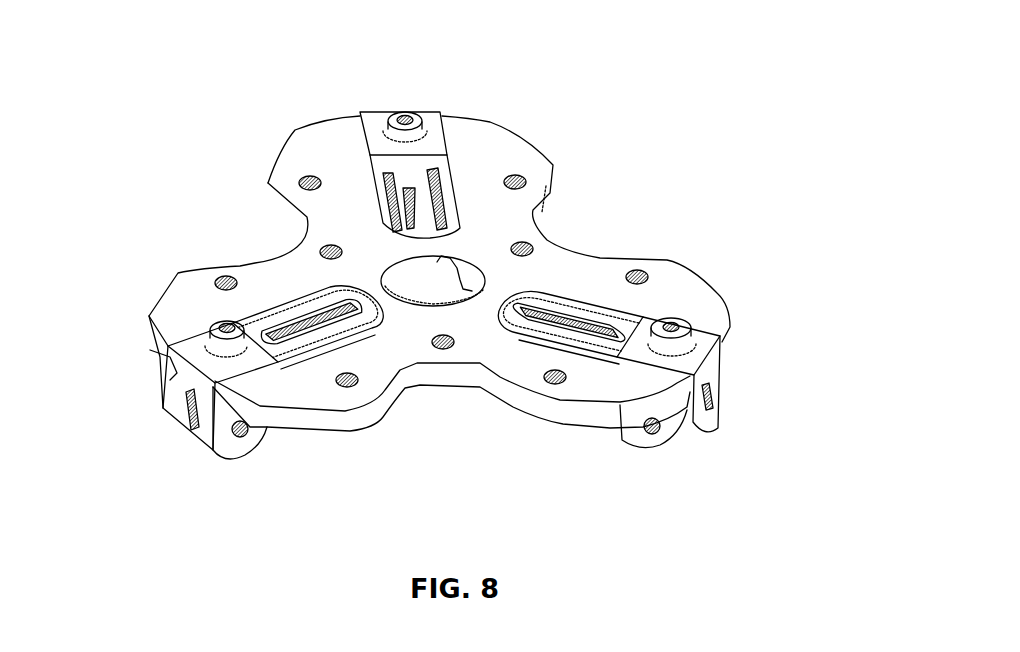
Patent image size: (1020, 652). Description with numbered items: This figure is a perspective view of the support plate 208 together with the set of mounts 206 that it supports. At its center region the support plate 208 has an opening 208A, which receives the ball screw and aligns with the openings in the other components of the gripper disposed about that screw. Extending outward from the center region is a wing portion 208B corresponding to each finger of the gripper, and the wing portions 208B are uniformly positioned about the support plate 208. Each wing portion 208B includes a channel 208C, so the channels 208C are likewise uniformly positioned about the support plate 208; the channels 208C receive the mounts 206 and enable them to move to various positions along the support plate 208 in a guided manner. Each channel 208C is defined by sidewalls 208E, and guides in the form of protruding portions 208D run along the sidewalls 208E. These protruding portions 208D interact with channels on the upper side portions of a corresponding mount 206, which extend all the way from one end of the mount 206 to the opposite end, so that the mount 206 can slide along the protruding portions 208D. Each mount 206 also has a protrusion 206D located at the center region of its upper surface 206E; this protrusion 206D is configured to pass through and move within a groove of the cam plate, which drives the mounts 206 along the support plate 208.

The mount 206 is at (117, 393).
The protrusion 206D is at (662, 348).
The upper surface 206E is at (722, 338).
The support plate 208 is at (655, 95).
The opening 208A is at (458, 301).
The wing portion 208B is at (570, 117).
The channel 208C is at (590, 333).
The protruding portion 208D is at (383, 205).
The sidewall 208E is at (283, 305).